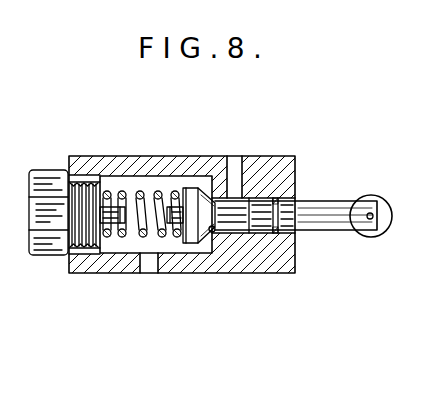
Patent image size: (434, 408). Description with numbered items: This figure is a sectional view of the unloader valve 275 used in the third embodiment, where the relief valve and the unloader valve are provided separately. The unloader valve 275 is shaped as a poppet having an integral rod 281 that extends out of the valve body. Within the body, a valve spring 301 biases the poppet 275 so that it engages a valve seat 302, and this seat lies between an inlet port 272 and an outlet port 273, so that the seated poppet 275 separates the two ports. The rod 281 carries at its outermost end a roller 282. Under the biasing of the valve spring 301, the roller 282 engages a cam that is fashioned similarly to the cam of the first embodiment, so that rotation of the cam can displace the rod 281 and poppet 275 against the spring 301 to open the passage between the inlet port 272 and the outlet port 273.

The valve spring 301 is at (121, 192).
The unloader valve 275 is at (208, 198).
The inlet port 272 is at (234, 176).
The outlet port 273 is at (150, 262).
The rod 281 is at (313, 212).
The roller 282 is at (385, 229).
The valve seat 302 is at (213, 232).